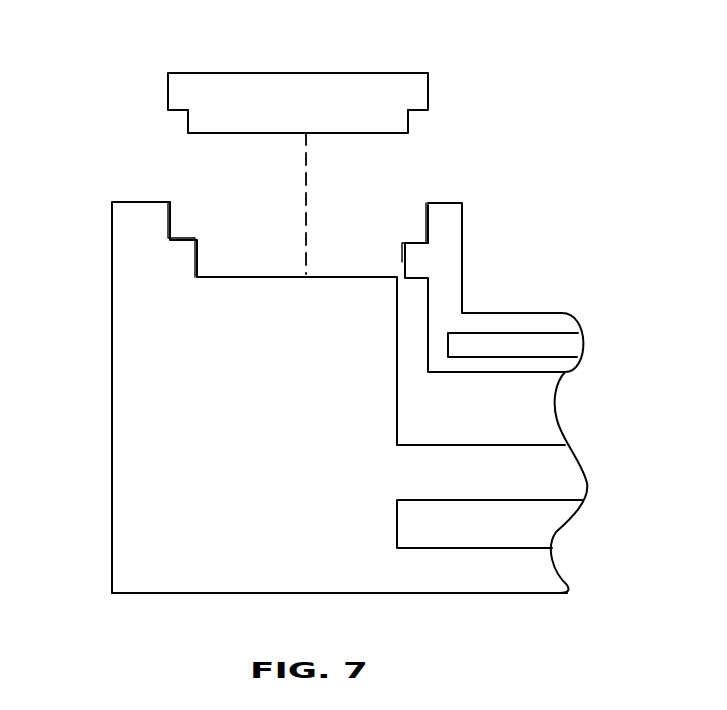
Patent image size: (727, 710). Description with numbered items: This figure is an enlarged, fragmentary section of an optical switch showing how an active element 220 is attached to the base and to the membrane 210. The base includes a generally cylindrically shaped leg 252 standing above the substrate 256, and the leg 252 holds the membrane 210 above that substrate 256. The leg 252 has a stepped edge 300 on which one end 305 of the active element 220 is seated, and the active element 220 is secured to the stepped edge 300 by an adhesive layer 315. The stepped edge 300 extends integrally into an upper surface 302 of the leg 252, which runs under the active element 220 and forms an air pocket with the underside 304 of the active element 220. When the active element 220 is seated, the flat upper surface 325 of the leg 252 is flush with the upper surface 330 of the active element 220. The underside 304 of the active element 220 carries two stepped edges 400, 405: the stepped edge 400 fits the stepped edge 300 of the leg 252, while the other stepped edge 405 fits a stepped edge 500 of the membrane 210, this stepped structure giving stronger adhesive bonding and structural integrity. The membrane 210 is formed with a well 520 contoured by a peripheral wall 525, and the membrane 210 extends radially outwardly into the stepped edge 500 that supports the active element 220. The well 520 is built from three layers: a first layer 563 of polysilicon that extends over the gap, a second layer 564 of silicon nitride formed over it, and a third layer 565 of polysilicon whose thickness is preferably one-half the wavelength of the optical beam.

The membrane 210 is at (507, 263).
The active element 220 is at (399, 67).
The leg 252 is at (260, 423).
The substrate 256 is at (548, 470).
The stepped edge 300 is at (209, 258).
The upper surface 302 is at (337, 275).
The underside 304 is at (373, 133).
The end 305 is at (167, 98).
The adhesive layer 315 is at (173, 233).
The flat upper surface 325 is at (113, 200).
The upper surface 330 is at (300, 73).
The stepped edge 400 is at (166, 125).
The stepped edge 405 is at (432, 126).
The stepped edge 500 is at (412, 231).
The well 520 is at (503, 305).
The peripheral wall 525 is at (463, 258).
The first layer 563 is at (558, 362).
The second layer 564 is at (572, 350).
The third layer 565 is at (550, 323).